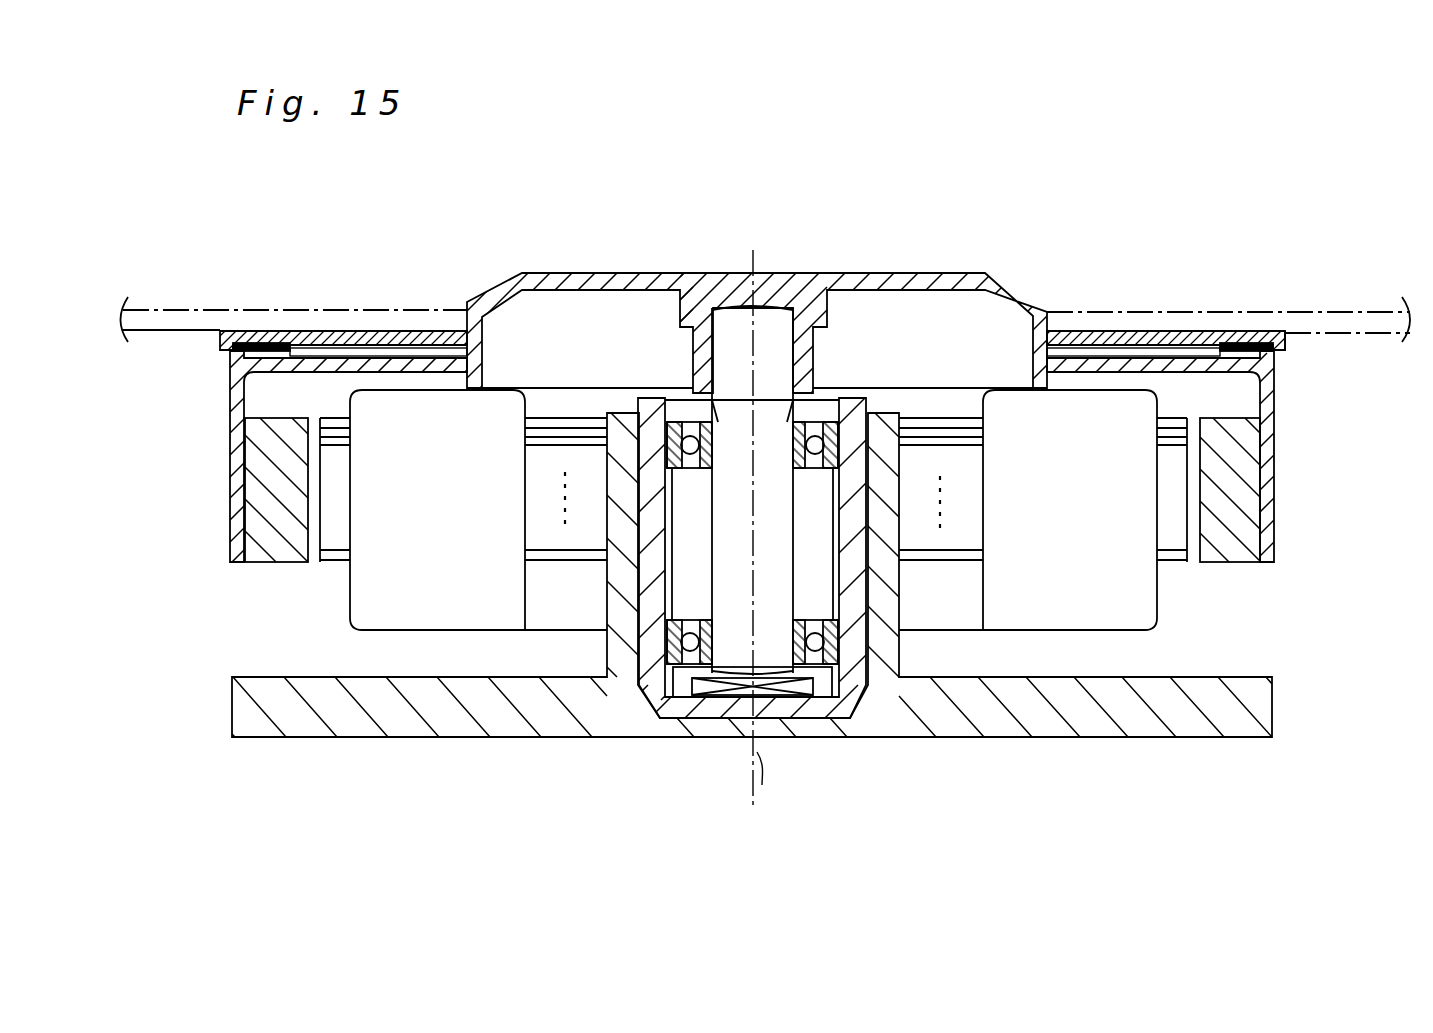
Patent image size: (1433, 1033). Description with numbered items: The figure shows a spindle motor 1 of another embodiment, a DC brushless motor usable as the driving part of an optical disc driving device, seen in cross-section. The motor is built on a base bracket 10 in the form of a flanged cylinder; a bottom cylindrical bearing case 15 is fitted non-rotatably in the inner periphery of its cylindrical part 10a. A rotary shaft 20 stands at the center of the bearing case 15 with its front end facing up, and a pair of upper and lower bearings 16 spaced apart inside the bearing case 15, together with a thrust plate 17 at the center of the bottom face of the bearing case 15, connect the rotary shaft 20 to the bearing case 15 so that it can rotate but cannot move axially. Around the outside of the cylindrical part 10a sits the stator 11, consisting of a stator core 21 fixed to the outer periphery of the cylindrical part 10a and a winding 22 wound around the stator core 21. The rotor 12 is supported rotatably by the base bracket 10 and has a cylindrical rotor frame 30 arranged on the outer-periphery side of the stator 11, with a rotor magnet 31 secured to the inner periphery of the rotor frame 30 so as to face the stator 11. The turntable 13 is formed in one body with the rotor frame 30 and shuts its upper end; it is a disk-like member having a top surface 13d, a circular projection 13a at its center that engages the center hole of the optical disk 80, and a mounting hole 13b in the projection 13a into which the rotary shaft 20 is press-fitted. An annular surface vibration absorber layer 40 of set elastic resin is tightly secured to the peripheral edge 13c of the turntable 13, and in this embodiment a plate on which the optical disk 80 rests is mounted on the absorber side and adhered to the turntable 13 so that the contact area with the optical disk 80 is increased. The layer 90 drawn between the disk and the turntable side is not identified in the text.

The spindle motor 1 is at (1133, 247).
The base bracket 10 is at (1222, 676).
The cylindrical part 10a is at (903, 655).
The stator 11 is at (1168, 598).
The rotor 12 is at (1285, 455).
The turntable 13 is at (1068, 323).
The circular projection 13a is at (960, 275).
The mounting hole 13b is at (727, 310).
The peripheral edge 13c is at (1278, 346).
The top surface 13d is at (327, 353).
The bearing case 15 is at (731, 700).
The bearings 16 is at (835, 415).
The thrust plate 17 is at (822, 697).
The rotary shaft 20 is at (770, 320).
The stator core 21 is at (943, 550).
The winding 22 is at (1112, 630).
The rotor frame 30 is at (1275, 403).
The rotor magnet 31 is at (1235, 548).
The surface vibration absorber layer 40 is at (1243, 343).
The optical disk 80 is at (262, 313).
The sheet 90 is at (397, 333).